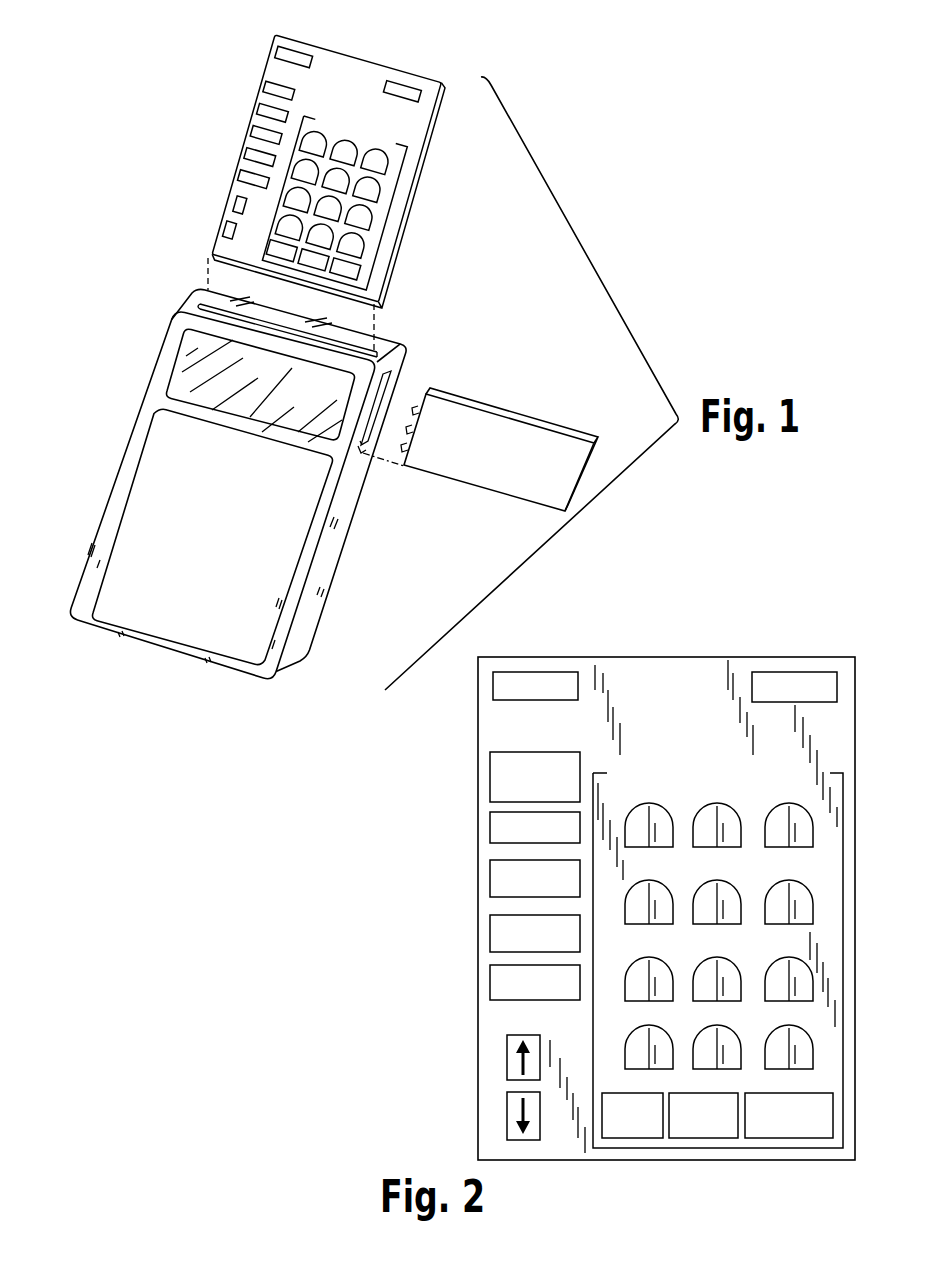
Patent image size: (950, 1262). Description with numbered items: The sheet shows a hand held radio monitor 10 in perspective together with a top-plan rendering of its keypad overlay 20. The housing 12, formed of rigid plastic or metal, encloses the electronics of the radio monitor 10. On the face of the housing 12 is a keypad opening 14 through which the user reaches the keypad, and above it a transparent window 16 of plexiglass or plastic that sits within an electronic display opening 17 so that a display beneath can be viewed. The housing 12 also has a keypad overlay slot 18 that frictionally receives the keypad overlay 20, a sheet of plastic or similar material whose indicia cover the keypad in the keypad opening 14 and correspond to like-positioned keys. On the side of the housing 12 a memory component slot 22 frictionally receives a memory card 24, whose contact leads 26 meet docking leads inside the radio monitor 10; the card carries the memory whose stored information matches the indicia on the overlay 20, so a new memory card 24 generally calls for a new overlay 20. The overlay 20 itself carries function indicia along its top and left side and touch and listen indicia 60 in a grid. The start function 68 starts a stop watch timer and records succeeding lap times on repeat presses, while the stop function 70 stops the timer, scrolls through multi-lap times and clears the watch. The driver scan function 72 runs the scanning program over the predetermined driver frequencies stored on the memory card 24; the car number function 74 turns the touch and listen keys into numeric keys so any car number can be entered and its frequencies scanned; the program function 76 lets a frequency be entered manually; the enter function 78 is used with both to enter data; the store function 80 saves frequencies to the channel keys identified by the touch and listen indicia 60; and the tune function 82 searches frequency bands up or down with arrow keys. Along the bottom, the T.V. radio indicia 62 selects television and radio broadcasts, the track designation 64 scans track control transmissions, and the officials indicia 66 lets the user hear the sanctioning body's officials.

In FIG. 1, the hand held radio monitor 10 is at (394, 571).
In FIG. 1, the housing 12 is at (300, 628).
In FIG. 1, the keypad opening 14 is at (100, 620).
In FIG. 1, the transparent window 16 is at (196, 351).
In FIG. 1, the electronic display opening 17 is at (165, 395).
In FIG. 1, the keypad overlay slot 18 is at (366, 351).
In FIG. 1, the keypad overlay 20 is at (395, 116).
In FIG. 2, the keypad overlay 20 is at (652, 690).
In FIG. 1, the memory component slot 22 is at (361, 449).
In FIG. 1, the memory card 24 is at (559, 452).
In FIG. 1, the contact leads 26 is at (436, 398).
In FIG. 2, the touch and listen indicia 60 is at (823, 862).
In FIG. 2, the T.V. radio indicia 62 is at (628, 1136).
In FIG. 2, the track designation 64 is at (710, 1136).
In FIG. 2, the officials indicia 66 is at (785, 1134).
In FIG. 2, the start function 68 is at (540, 672).
In FIG. 2, the stop function 70 is at (828, 672).
In FIG. 2, the driver scan function 72 is at (498, 778).
In FIG. 2, the car number function 74 is at (495, 818).
In FIG. 2, the program function 76 is at (497, 875).
In FIG. 2, the enter function 78 is at (497, 923).
In FIG. 2, the store function 80 is at (497, 977).
In FIG. 2, the tune function 82 is at (492, 1020).